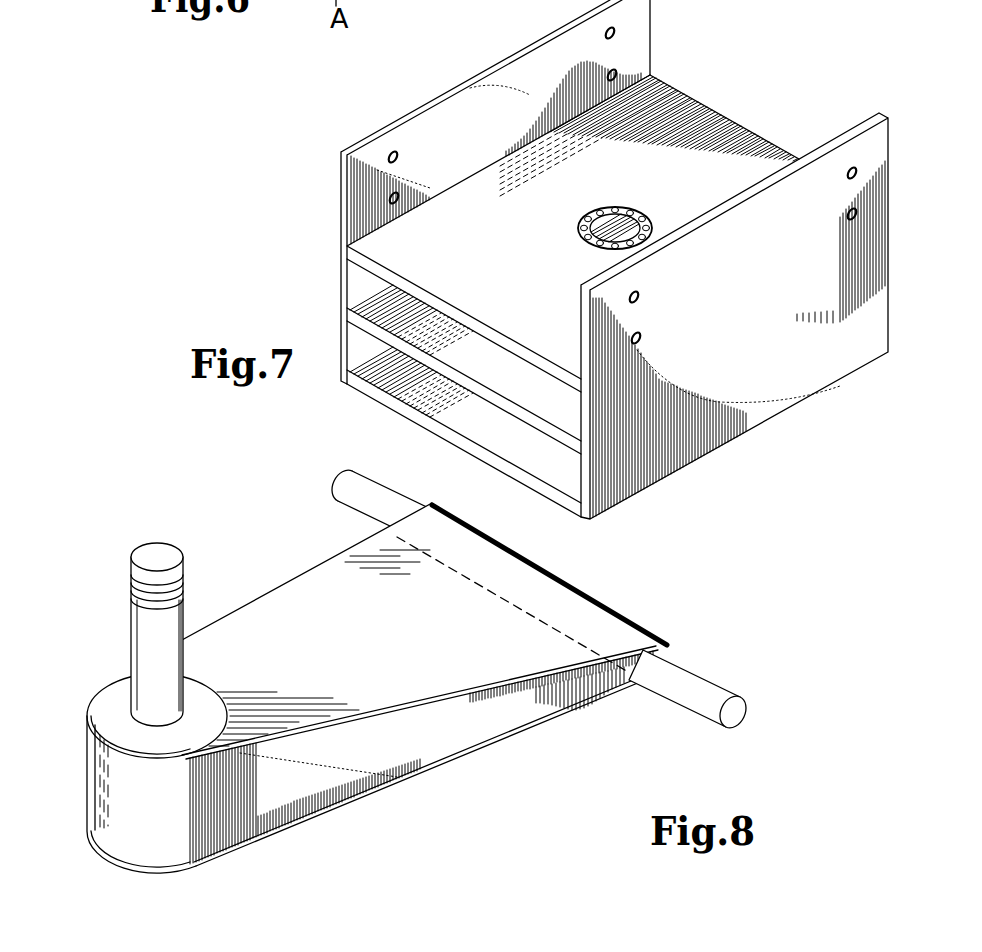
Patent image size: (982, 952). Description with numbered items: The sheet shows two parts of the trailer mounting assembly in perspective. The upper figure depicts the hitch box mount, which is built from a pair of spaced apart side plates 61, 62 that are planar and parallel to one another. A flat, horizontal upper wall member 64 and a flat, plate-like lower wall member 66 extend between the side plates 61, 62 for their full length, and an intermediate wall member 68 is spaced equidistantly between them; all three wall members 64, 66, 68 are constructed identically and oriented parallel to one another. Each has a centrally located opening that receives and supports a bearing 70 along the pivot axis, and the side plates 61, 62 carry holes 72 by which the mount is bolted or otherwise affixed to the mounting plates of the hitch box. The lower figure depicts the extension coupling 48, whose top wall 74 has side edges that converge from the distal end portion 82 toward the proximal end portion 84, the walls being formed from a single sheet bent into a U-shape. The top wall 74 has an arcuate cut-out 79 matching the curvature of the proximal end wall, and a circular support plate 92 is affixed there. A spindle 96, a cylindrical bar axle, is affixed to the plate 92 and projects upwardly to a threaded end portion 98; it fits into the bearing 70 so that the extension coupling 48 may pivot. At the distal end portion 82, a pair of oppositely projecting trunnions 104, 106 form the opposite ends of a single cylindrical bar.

In FIG. 7, the side plate 61 is at (706, 423).
In FIG. 7, the side plate 62 is at (478, 121).
In FIG. 7, the upper wall member 64 is at (733, 172).
In FIG. 7, the lower wall member 66 is at (482, 428).
In FIG. 7, the intermediate wall member 68 is at (385, 317).
In FIG. 7, the bearing 70 is at (613, 230).
In FIG. 7, the holes 72 is at (391, 198).
In FIG. 8, the extension coupling 48 is at (241, 513).
In FIG. 8, the top wall 74 is at (387, 639).
In FIG. 8, the arcuate cut-out 79 is at (203, 683).
In FIG. 8, the distal end portion 82 is at (643, 632).
In FIG. 8, the proximal end portion 84 is at (128, 787).
In FIG. 8, the circular support plate 92 is at (117, 692).
In FIG. 8, the spindle 96 is at (171, 612).
In FIG. 8, the threaded end portion 98 is at (142, 578).
In FIG. 8, the trunnion 104 is at (690, 688).
In FIG. 8, the trunnion 106 is at (357, 492).